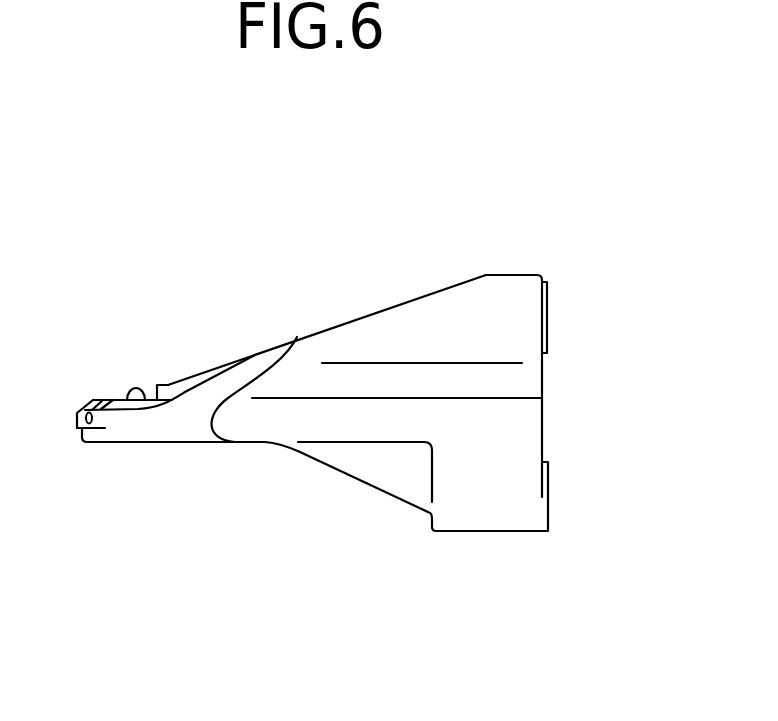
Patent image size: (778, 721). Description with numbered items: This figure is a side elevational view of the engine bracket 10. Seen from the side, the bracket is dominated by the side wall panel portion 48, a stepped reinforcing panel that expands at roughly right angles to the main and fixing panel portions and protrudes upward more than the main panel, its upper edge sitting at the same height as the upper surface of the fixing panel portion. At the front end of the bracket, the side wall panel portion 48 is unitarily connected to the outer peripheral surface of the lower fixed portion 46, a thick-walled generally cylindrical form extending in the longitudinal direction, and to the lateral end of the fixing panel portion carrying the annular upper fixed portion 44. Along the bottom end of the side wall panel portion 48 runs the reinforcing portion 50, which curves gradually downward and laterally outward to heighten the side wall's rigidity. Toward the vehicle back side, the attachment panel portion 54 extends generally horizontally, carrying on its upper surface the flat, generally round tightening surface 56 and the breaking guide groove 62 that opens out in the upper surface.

The engine bracket 10 is at (562, 182).
The upper fixed portion 44 is at (546, 311).
The lower fixed portion 46 is at (505, 513).
The side wall panel portion 48 is at (410, 329).
The reinforcing portion 50 is at (378, 465).
The attachment panel portion 54 is at (118, 450).
The tightening surface 56 is at (144, 397).
The breaking guide groove 62 is at (88, 418).